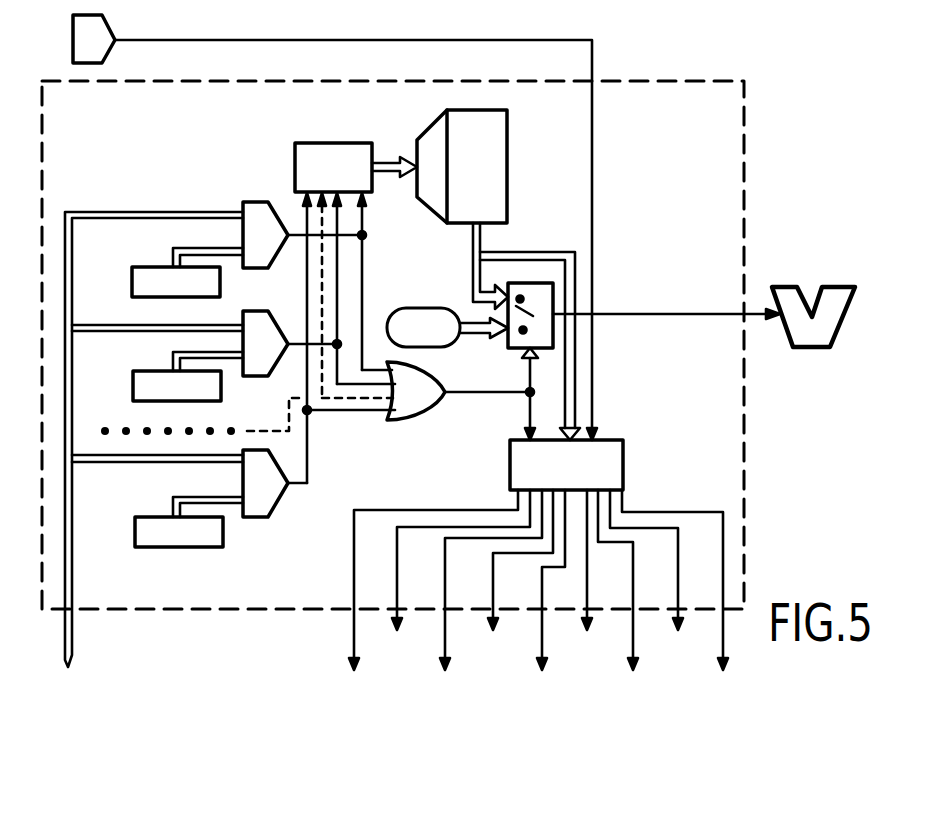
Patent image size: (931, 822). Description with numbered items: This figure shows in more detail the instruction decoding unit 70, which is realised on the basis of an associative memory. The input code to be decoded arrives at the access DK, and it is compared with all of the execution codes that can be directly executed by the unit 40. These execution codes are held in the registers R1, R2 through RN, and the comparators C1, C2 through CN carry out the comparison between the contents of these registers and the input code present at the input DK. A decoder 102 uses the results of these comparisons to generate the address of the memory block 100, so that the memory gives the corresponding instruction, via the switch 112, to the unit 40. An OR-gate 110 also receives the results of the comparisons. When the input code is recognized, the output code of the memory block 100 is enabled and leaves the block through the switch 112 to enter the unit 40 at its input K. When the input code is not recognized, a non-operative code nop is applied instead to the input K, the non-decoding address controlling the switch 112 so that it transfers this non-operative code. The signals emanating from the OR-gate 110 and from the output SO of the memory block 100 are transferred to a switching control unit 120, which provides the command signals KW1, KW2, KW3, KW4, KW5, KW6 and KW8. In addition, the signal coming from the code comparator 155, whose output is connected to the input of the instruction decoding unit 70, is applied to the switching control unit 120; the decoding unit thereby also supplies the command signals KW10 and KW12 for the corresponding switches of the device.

The code comparator 155 is at (118, 32).
The decoder 102 is at (336, 143).
The memory block 100 is at (507, 168).
The output of the memory block SO is at (473, 228).
The switch 112 is at (509, 348).
The non-operative code nop is at (447, 327).
The OR-gate 110 is at (430, 404).
The comparator C1 is at (256, 202).
The comparator C2 is at (258, 311).
The comparator CN is at (282, 498).
The register R1 is at (132, 287).
The register R2 is at (133, 392).
The register RN is at (135, 532).
The access input DK is at (74, 612).
The instruction decoding unit 70 is at (205, 610).
The switching control unit 120 is at (510, 460).
The command signal KW1 is at (424, 600).
The command signal KW2 is at (451, 580).
The command signal KW3 is at (481, 600).
The command signal KW4 is at (511, 580).
The command signal KW5 is at (541, 600).
The command signal KW6 is at (589, 580).
The command signal KW8 is at (629, 600).
The command signal KW10 is at (661, 580).
The command signal KW12 is at (692, 600).
The input of the unit K is at (782, 320).
The unit 40 is at (809, 347).